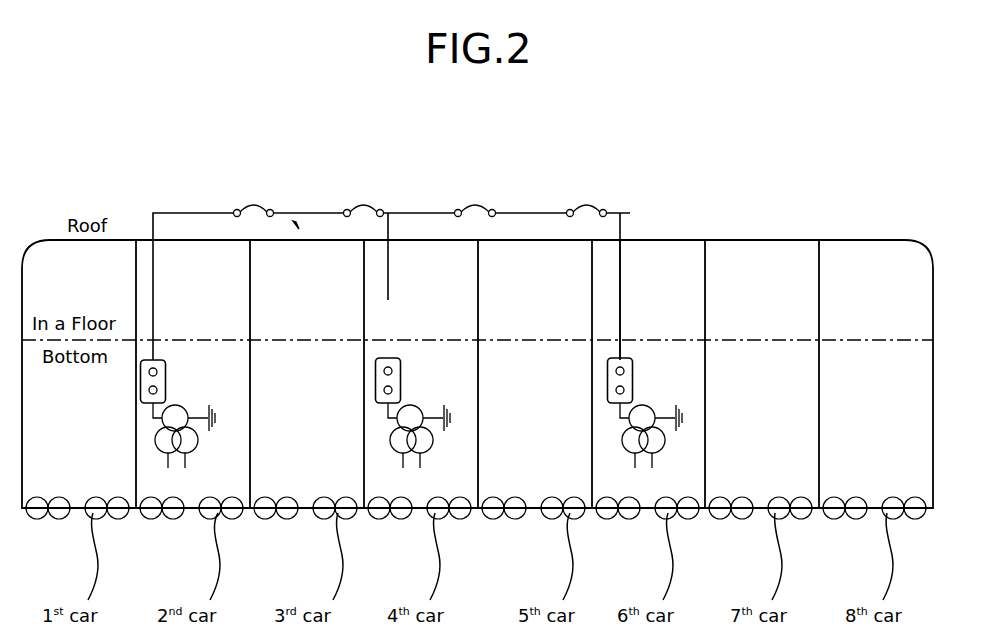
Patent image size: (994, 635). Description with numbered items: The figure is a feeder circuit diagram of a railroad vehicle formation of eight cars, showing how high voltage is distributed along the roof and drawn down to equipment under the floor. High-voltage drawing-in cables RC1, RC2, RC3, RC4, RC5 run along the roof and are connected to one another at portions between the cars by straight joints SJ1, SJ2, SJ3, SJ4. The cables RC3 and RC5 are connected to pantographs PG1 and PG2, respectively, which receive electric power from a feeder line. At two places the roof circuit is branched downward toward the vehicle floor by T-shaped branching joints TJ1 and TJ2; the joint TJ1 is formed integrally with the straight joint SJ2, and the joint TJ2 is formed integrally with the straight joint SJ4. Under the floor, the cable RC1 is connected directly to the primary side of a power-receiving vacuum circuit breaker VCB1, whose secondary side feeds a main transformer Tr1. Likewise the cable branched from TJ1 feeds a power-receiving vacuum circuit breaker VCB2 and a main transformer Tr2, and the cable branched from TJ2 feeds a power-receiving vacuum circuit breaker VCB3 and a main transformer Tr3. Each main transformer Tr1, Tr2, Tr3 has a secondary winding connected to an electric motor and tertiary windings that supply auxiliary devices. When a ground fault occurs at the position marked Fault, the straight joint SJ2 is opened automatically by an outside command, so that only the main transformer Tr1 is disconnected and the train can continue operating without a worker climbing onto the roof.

The high-voltage drawing-in cable RC1 is at (182, 212).
The high-voltage drawing-in cable RC2 is at (316, 212).
The high-voltage drawing-in cable RC3 is at (443, 208).
The high-voltage drawing-in cable RC4 is at (530, 204).
The high-voltage drawing-in cable RC5 is at (620, 206).
The straight joint SJ1 is at (245, 203).
The straight joint SJ2 is at (365, 205).
The straight joint SJ3 is at (487, 205).
The straight joint SJ4 is at (568, 205).
The T-shaped branching joint TJ1 is at (398, 224).
The T-shaped branching joint TJ2 is at (622, 216).
The pantograph PG1 is at (397, 203).
The pantograph PG2 is at (628, 206).
The ground fault position Fault is at (296, 226).
The power-receiving vacuum circuit breaker VCB1 is at (141, 388).
The power-receiving vacuum circuit breaker VCB2 is at (376, 380).
The power-receiving vacuum circuit breaker VCB3 is at (608, 387).
The main transformer Tr1 is at (160, 450).
The main transformer Tr2 is at (440, 453).
The main transformer Tr3 is at (670, 450).